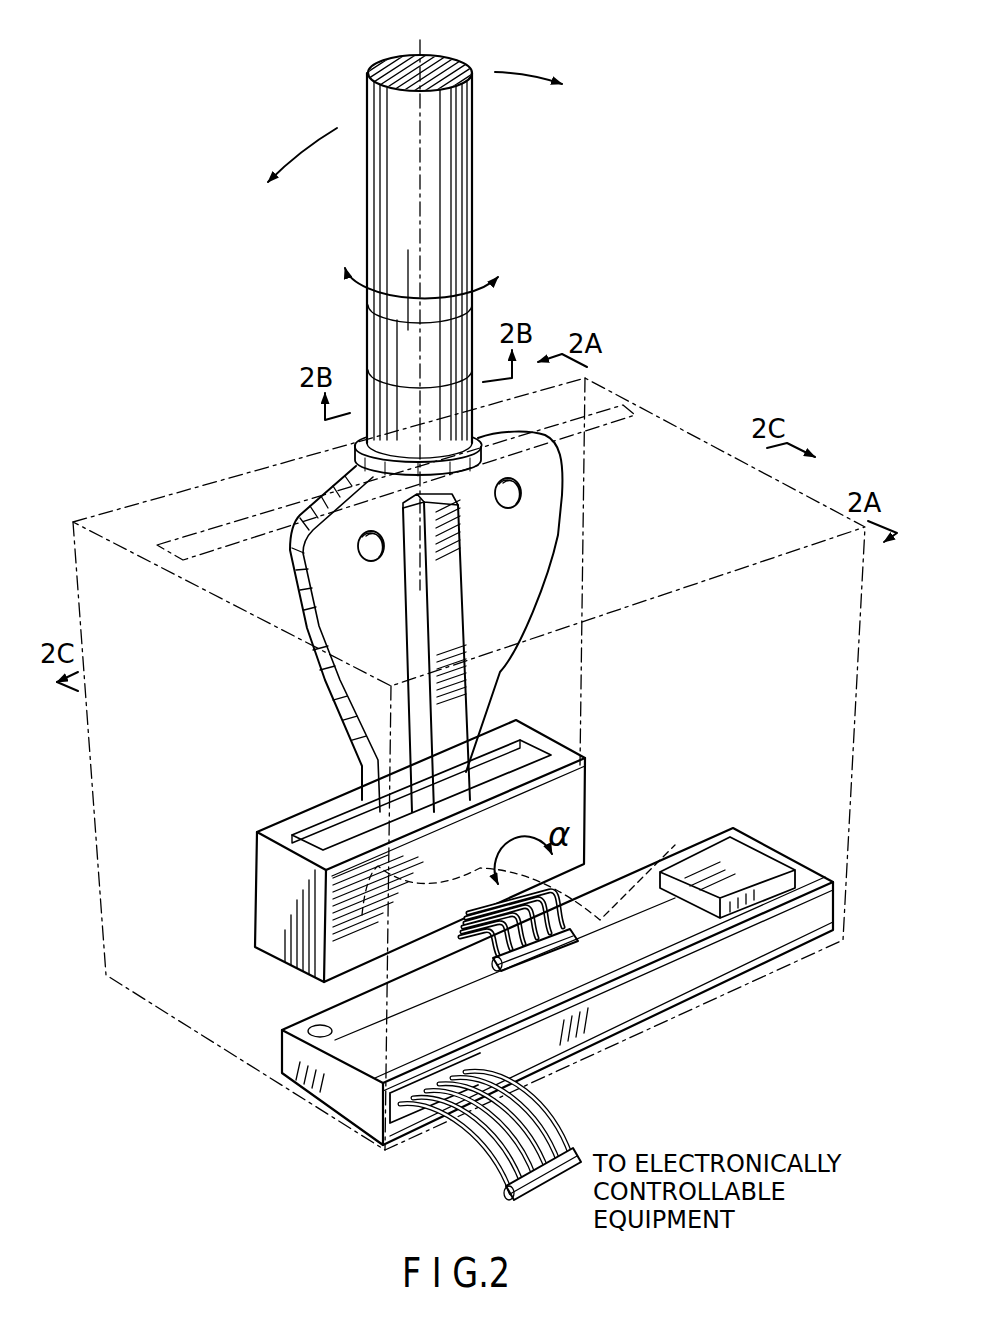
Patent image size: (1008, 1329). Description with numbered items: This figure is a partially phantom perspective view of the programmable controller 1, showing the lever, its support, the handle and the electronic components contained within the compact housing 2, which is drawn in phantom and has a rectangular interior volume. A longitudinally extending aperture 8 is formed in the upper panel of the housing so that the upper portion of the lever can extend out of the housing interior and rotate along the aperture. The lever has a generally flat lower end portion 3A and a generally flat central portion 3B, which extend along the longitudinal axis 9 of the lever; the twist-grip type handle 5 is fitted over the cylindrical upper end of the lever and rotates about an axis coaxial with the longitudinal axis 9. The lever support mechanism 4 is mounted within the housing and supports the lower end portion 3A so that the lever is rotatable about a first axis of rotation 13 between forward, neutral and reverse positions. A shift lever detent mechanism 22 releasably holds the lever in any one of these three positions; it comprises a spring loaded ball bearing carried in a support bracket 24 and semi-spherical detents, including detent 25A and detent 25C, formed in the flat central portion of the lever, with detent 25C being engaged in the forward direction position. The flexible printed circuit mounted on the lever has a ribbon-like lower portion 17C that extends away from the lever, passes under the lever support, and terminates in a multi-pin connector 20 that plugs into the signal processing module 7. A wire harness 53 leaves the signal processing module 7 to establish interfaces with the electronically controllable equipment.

The programmable controller 1 is at (228, 1106).
The compact housing 2 is at (165, 1012).
The lower end portion 3A is at (396, 943).
The central portion 3B is at (320, 556).
The lever support mechanism 4 is at (275, 876).
The twist-grip type handle 5 is at (445, 230).
The signal processing module 7 is at (757, 954).
The longitudinally extending aperture 8 is at (222, 520).
The longitudinal axis 9 is at (422, 42).
The first axis of rotation 13 is at (612, 915).
The flexible cable 17C is at (459, 928).
The multi-pin connector 20 is at (555, 953).
The shift lever detent mechanism 22 is at (490, 607).
The support bracket 24 is at (500, 573).
The semi-spherical detent 25A is at (520, 492).
The semi-spherical detent 25C is at (380, 562).
The wire harness 53 is at (450, 1168).